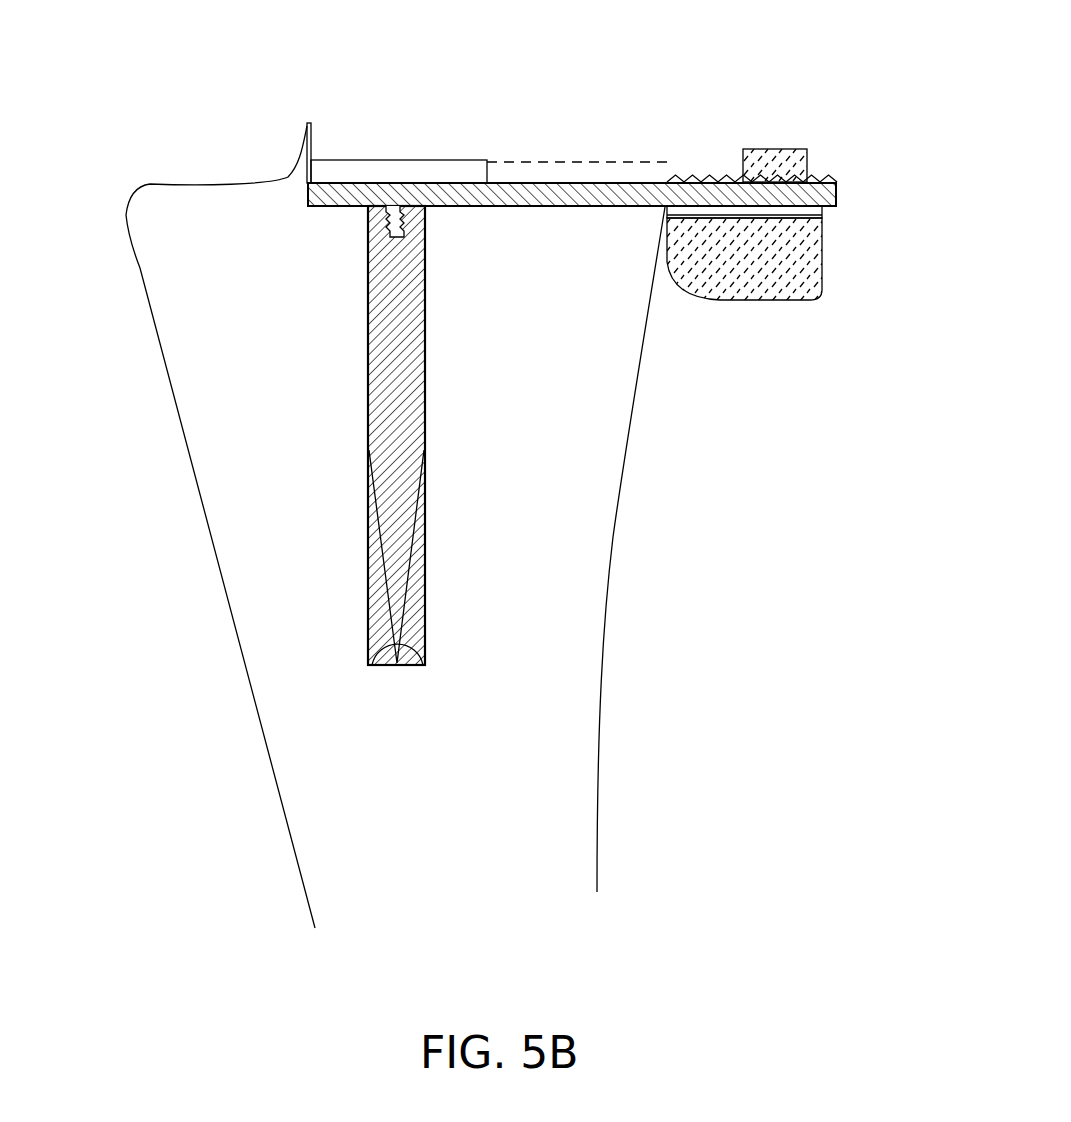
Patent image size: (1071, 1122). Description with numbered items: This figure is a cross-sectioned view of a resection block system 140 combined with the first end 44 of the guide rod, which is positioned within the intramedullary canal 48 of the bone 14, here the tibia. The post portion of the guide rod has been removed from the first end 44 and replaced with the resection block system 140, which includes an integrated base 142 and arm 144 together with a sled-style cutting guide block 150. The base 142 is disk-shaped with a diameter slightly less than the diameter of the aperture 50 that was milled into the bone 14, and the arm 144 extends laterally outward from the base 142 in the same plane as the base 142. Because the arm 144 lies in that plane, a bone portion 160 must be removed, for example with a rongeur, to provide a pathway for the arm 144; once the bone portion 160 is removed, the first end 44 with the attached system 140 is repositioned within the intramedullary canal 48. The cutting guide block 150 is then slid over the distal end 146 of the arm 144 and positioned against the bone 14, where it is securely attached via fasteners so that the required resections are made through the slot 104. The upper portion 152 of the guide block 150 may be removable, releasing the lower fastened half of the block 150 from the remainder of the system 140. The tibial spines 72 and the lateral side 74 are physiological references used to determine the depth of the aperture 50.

The bone 14 is at (612, 537).
The lateral side 74 is at (150, 183).
The tibial spines 72 is at (306, 125).
The aperture 50 is at (375, 175).
The bone portion 160 is at (617, 162).
The upper portion of the guide block 152 is at (786, 148).
The cutting guide block 150 is at (808, 150).
The distal end of the arm 146 is at (838, 183).
The slot 104 is at (824, 212).
The base 142 is at (348, 208).
The arm 144 is at (580, 207).
The first end of the guide rod 44 is at (420, 400).
The intramedullary canal 48 is at (425, 585).
The resection block system 140 is at (790, 56).